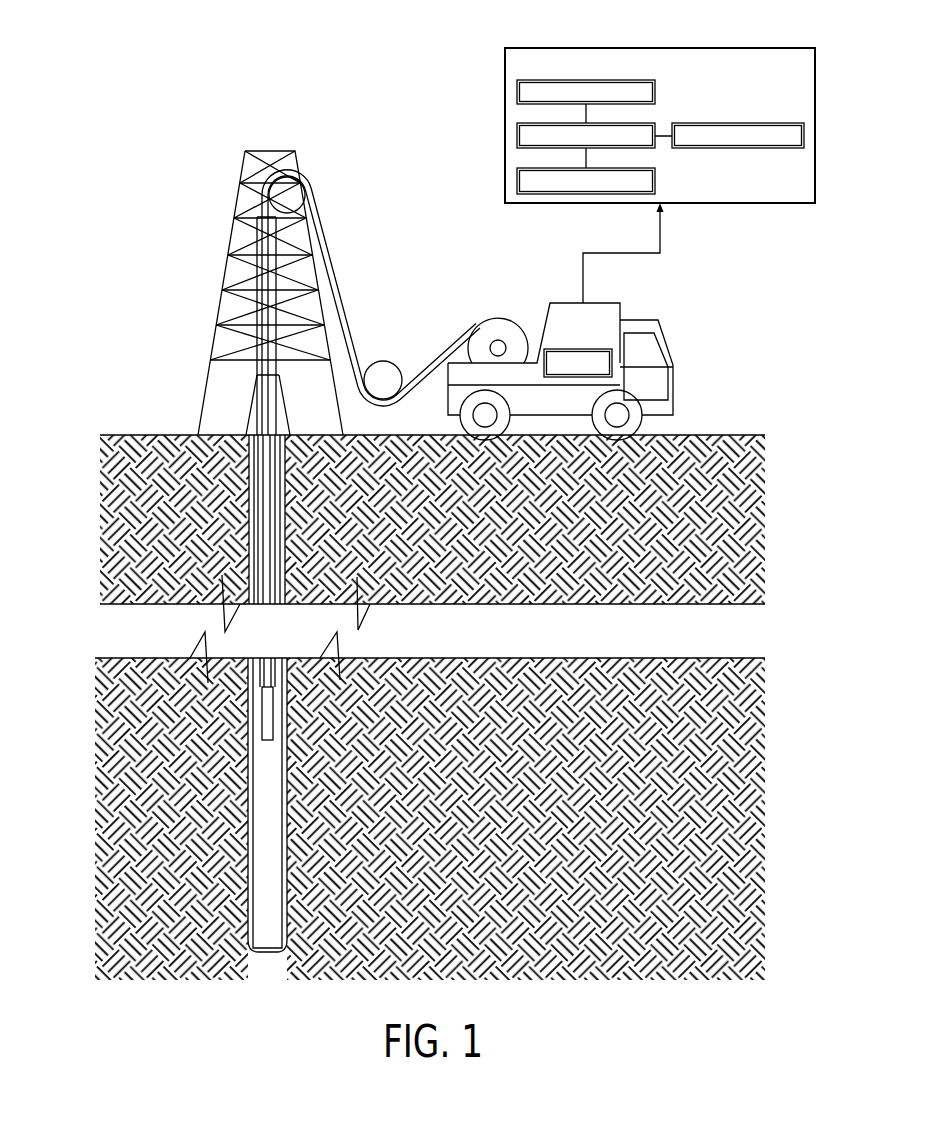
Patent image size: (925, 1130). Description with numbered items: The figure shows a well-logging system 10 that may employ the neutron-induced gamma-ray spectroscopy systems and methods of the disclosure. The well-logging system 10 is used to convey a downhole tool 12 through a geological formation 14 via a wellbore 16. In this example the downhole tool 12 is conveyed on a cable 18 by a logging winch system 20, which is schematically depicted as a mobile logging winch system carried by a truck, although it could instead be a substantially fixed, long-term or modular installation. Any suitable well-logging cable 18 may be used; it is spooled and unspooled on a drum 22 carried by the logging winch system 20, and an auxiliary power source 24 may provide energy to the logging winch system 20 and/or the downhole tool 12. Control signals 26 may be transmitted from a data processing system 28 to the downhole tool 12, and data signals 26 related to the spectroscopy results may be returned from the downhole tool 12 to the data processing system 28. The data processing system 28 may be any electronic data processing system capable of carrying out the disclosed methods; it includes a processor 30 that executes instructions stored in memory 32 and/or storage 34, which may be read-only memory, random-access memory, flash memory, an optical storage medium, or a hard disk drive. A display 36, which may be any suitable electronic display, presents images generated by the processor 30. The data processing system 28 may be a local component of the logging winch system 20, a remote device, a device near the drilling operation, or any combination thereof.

The well-logging system 10 is at (165, 202).
The downhole tool 12 is at (253, 698).
The geological formation 14 is at (110, 758).
The wellbore 16 is at (236, 488).
The cable 18 is at (350, 285).
The logging winch system 20 is at (566, 302).
The drum 22 is at (495, 320).
The auxiliary power source 24 is at (579, 349).
The control signals / data signals 26 is at (661, 226).
The data processing system 28 is at (658, 48).
The processor 30 is at (635, 122).
The memory 32 is at (516, 90).
The storage 34 is at (650, 183).
The display 36 is at (740, 123).